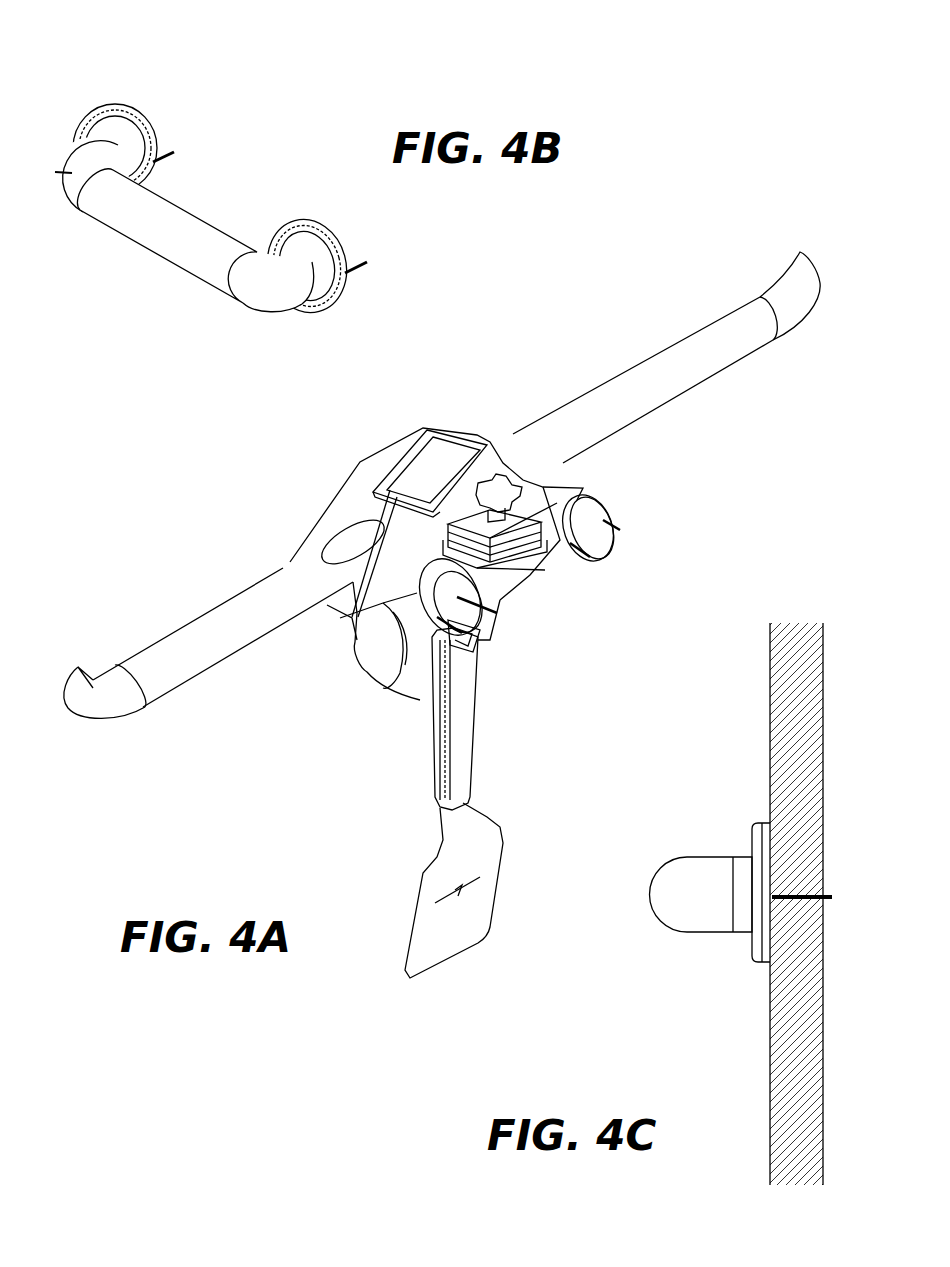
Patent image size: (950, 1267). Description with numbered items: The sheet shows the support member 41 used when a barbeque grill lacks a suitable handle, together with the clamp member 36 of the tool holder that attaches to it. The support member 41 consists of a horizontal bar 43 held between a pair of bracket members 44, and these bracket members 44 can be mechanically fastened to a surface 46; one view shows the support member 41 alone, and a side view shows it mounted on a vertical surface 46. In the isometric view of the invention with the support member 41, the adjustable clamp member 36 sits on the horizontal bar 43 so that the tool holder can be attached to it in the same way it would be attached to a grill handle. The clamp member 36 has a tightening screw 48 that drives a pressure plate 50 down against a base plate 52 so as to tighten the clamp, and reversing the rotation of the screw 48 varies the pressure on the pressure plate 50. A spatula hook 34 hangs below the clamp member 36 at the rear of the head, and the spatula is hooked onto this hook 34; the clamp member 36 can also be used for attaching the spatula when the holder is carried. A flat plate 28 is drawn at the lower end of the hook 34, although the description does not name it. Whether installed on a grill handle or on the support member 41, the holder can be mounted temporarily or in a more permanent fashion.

In FIG. 4A, the mounting plate 28 is at (455, 880).
In FIG. 4A, the spatula hook 34 is at (475, 650).
In FIG. 4A, the clamp member 36 is at (556, 520).
In FIG. 4B, the support member 41 is at (252, 155).
In FIG. 4A, the support member 41 is at (636, 480).
In FIG. 4C, the support member 41 is at (625, 871).
In FIG. 4B, the horizontal bar 43 is at (143, 226).
In FIG. 4B, the bracket members 44 is at (258, 280).
In FIG. 4C, the bracket members 44 is at (717, 912).
In FIG. 4C, the surface 46 is at (768, 1052).
In FIG. 4A, the tightening screw 48 is at (498, 490).
In FIG. 4A, the pressure plate 50 is at (523, 537).
In FIG. 4A, the base plate 52 is at (482, 592).